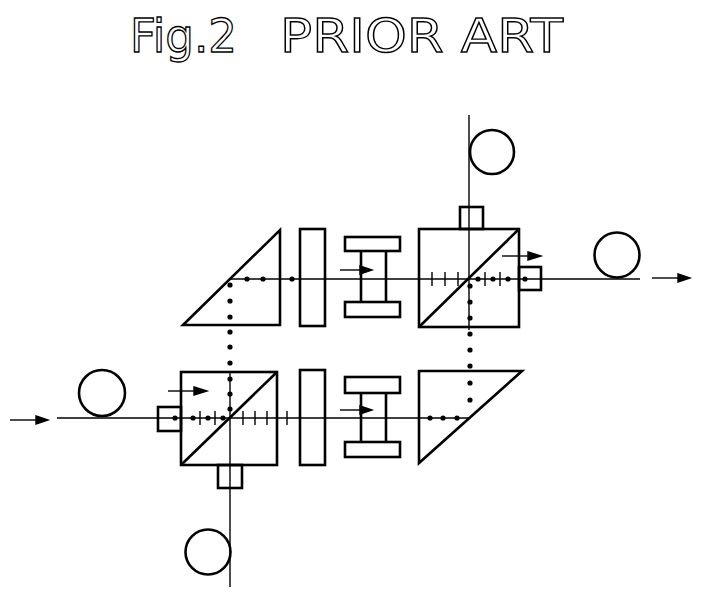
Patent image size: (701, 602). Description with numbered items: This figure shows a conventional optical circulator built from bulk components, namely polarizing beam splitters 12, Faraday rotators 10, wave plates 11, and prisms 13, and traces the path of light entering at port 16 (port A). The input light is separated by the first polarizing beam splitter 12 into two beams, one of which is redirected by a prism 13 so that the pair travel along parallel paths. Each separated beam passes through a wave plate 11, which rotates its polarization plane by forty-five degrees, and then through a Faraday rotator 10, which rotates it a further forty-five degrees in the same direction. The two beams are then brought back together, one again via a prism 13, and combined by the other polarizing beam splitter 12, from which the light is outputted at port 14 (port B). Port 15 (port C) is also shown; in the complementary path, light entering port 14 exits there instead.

The Faraday rotator 10 is at (374, 240).
The wave plate 11 is at (313, 236).
The polarizing beam splitter 12 is at (491, 229).
The prism 13 is at (265, 250).
The port 14 is at (631, 280).
The port 15 is at (232, 532).
The port 16 is at (98, 419).